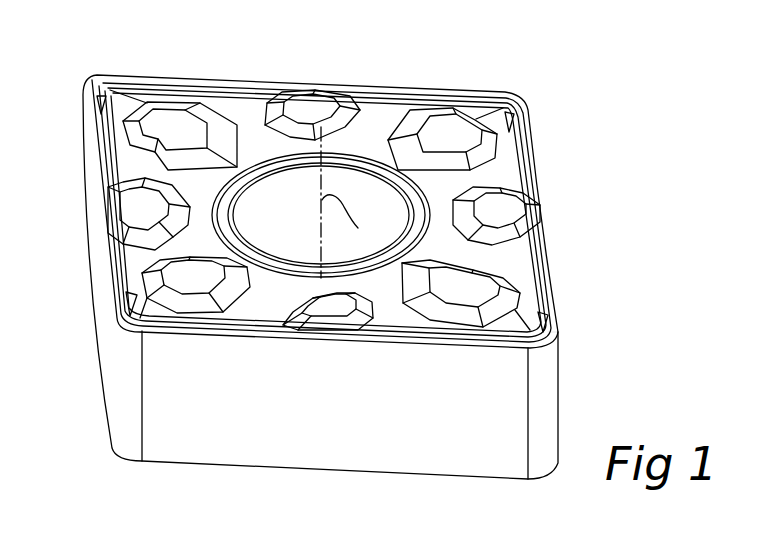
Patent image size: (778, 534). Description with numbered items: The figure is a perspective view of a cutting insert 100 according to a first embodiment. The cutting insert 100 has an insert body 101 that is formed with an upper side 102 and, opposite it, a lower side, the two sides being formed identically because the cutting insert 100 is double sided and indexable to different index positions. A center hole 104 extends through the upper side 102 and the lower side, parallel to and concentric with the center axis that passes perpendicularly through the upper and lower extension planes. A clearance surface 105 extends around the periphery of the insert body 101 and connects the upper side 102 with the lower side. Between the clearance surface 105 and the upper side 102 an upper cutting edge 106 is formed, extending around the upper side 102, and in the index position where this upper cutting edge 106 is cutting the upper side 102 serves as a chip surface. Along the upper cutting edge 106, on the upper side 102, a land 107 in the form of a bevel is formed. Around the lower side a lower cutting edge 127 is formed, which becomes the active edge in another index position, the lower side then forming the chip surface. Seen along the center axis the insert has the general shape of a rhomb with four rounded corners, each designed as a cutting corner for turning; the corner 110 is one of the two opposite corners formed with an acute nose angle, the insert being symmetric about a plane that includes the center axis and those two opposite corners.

The cutting insert 100 is at (433, 78).
The insert body 101 is at (546, 224).
The upper side 102 is at (260, 138).
The center hole 104 is at (252, 215).
The clearance surface 105 is at (437, 430).
The upper cutting edge 106 is at (558, 314).
The land 107 is at (522, 138).
The corner 110 is at (320, 501).
The lower cutting edge 127 is at (300, 468).